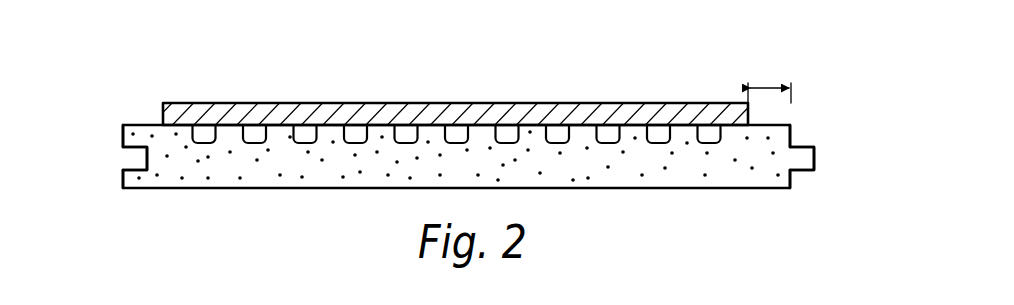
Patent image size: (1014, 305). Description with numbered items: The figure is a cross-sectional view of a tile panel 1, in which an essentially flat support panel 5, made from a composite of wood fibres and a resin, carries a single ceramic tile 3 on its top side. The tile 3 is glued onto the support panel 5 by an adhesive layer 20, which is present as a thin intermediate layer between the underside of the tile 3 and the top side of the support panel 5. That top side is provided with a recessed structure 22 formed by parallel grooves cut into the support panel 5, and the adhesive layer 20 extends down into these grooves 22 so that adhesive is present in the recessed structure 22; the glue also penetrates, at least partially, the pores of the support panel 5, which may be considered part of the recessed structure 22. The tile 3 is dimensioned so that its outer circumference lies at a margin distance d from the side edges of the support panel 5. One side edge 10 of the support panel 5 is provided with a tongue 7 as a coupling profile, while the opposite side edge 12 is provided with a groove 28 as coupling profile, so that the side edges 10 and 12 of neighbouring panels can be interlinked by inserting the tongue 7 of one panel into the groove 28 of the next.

The tile panel 1 is at (465, 147).
The tile 3 is at (545, 117).
The support panel 5 is at (262, 172).
The tongue 7 is at (803, 158).
The side edge 10 is at (819, 183).
The side edge 12 is at (106, 184).
The adhesive layer 20 is at (433, 126).
The recessed structure 22 is at (258, 130).
The groove 28 is at (133, 158).
The margin distance d is at (770, 85).